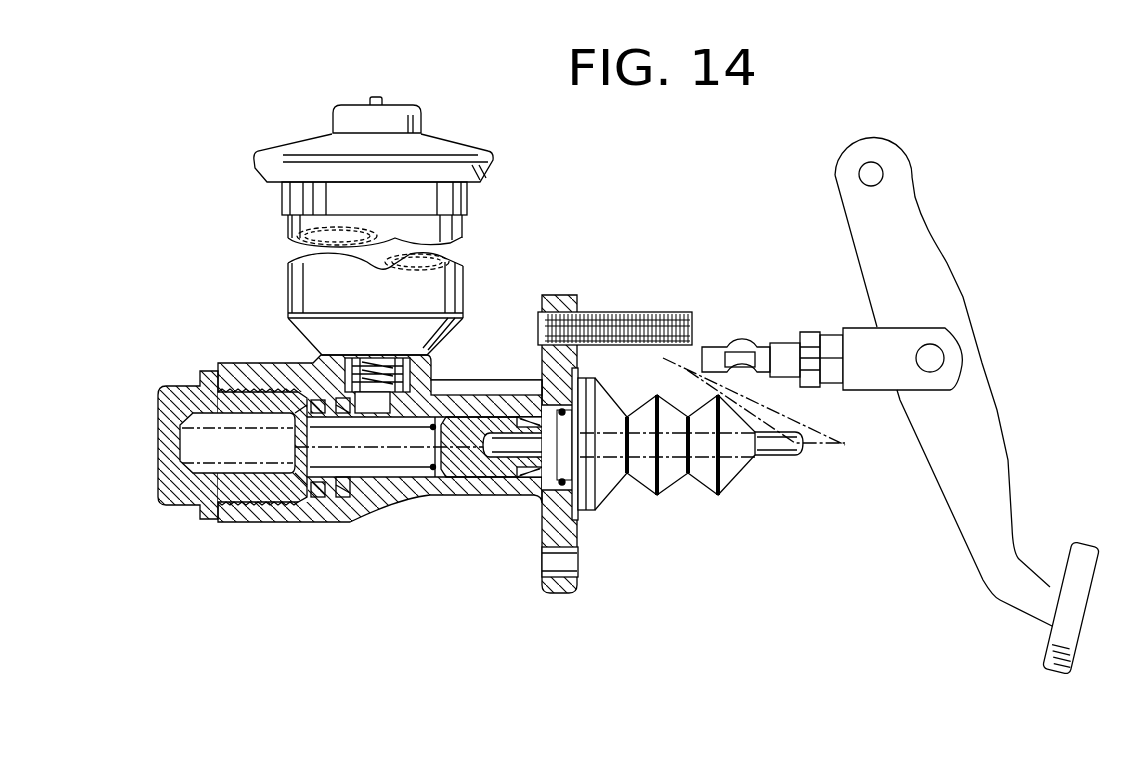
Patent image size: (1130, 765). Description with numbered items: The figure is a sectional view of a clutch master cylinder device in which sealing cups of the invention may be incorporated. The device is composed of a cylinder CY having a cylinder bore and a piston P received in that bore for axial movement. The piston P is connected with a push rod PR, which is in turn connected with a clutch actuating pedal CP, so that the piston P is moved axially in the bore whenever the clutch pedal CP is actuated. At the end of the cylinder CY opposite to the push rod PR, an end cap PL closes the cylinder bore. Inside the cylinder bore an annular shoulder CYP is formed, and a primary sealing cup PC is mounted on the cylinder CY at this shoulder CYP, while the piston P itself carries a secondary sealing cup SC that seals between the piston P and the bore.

The cylinder CY is at (415, 506).
The end cap PL is at (250, 492).
The primary sealing cup PC is at (318, 497).
The annular shoulder CYP is at (348, 494).
The piston P is at (486, 478).
The secondary sealing cup SC is at (536, 479).
The push rod PR is at (582, 470).
The clutch actuating pedal CP is at (1066, 656).